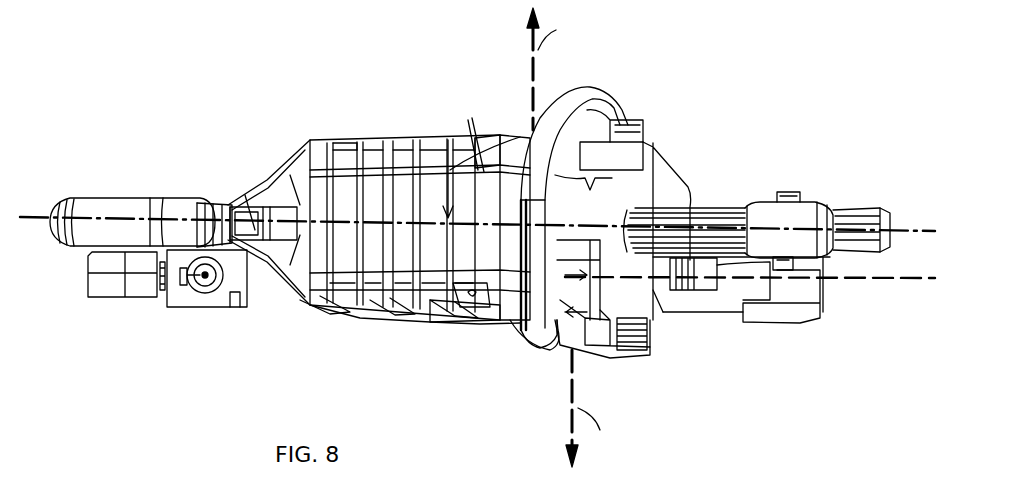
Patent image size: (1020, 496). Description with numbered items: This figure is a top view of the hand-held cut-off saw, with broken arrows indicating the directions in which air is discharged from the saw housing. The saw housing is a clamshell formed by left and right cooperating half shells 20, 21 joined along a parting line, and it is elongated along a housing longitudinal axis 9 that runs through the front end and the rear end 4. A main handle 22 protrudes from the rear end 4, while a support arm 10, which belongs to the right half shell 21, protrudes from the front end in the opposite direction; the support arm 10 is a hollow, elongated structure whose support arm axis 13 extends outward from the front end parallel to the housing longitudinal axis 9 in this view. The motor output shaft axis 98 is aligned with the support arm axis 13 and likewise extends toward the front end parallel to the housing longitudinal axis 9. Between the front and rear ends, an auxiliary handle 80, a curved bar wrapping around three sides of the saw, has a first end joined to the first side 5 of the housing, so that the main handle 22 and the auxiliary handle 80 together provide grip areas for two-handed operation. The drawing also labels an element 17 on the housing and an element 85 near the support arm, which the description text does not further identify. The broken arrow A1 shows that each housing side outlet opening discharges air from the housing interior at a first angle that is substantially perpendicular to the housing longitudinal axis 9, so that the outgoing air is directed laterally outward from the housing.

The main handle 22 is at (137, 207).
The support arm 10 is at (738, 327).
The housing face 17 is at (363, 157).
The rear end 4 is at (473, 116).
The left half shell 20 is at (472, 127).
The first side 5 is at (456, 337).
The right half shell 21 is at (467, 323).
The auxiliary handle 80 is at (597, 94).
The grip element 85 is at (847, 213).
The housing longitudinal axis 9 is at (920, 223).
The support arm axis 13 is at (787, 292).
The output shaft axis 98 is at (857, 283).
The arrow A1 is at (572, 237).